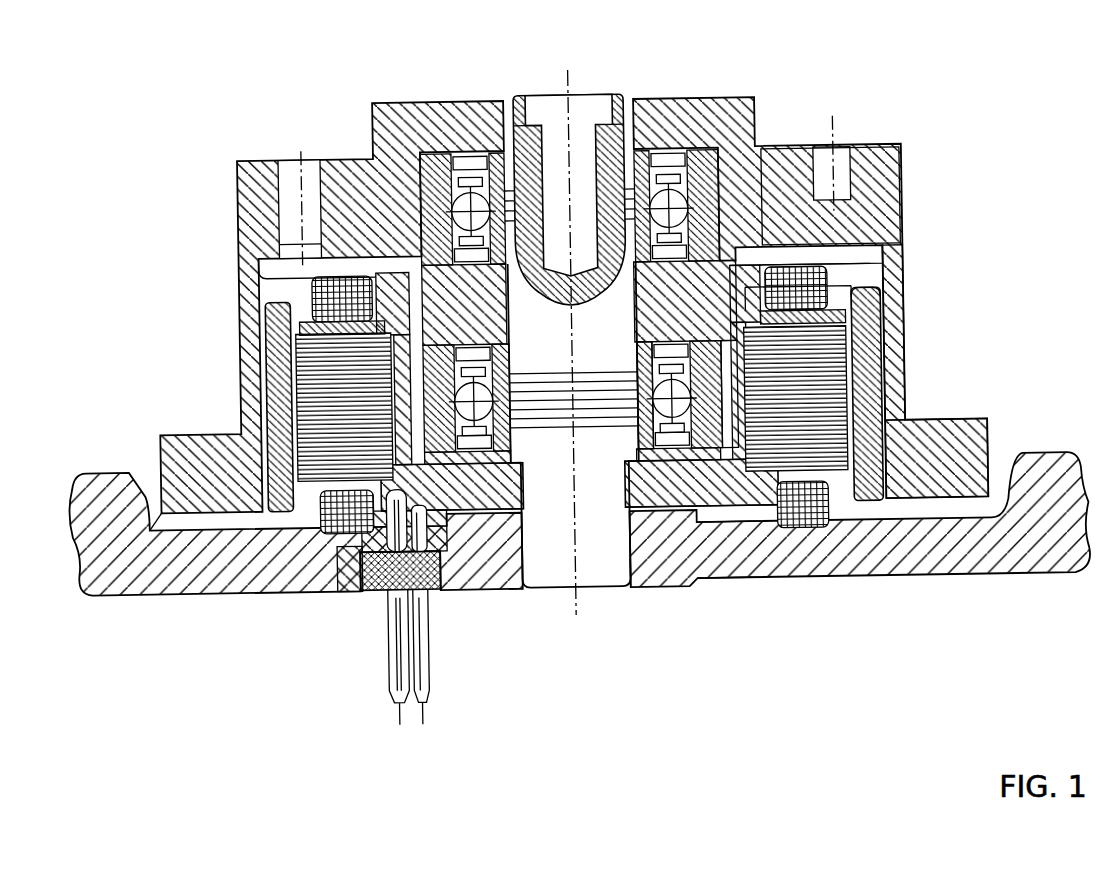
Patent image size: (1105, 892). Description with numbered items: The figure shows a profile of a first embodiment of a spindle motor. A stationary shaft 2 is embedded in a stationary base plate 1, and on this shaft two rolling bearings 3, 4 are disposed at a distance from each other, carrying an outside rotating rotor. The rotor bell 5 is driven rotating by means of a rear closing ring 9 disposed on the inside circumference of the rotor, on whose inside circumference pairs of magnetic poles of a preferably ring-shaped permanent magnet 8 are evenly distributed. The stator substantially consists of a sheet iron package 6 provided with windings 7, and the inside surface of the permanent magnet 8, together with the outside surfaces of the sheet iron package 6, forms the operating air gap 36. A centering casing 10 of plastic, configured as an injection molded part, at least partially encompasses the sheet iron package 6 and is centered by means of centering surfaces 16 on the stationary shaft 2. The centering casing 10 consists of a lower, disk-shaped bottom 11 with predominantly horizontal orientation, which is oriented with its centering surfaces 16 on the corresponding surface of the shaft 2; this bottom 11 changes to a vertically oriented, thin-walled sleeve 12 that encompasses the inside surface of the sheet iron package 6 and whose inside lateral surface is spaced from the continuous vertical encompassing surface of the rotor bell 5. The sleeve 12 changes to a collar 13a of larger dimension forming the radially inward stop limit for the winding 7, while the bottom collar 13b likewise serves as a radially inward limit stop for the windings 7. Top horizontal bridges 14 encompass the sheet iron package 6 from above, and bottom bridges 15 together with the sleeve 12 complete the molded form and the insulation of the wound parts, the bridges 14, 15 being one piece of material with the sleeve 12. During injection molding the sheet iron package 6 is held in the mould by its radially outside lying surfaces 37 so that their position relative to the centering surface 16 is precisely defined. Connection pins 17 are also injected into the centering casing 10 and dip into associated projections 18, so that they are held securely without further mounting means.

The base plate 1 is at (985, 548).
The shaft 2 is at (602, 540).
The rolling bearing 3 is at (715, 187).
The rolling bearing 4 is at (828, 270).
The rotor bell 5 is at (880, 195).
The sheet iron package 6 is at (800, 430).
The winding 7 is at (783, 310).
The permanent magnet 8 is at (863, 367).
The rear closing ring 9 is at (890, 395).
The centering casing 10 is at (662, 612).
The bottom 11 is at (712, 580).
The sleeve 12 is at (762, 420).
The collar 13a is at (757, 265).
The bottom collar 13b is at (735, 395).
The horizontal bridges 14 is at (850, 293).
The bottom bridges 15 is at (845, 500).
The centering surfaces 16 is at (530, 487).
The connection pins 17 is at (425, 600).
The projections 18 is at (362, 596).
The operating air gap 36 is at (897, 418).
The radially outside lying surfaces 37 is at (770, 367).